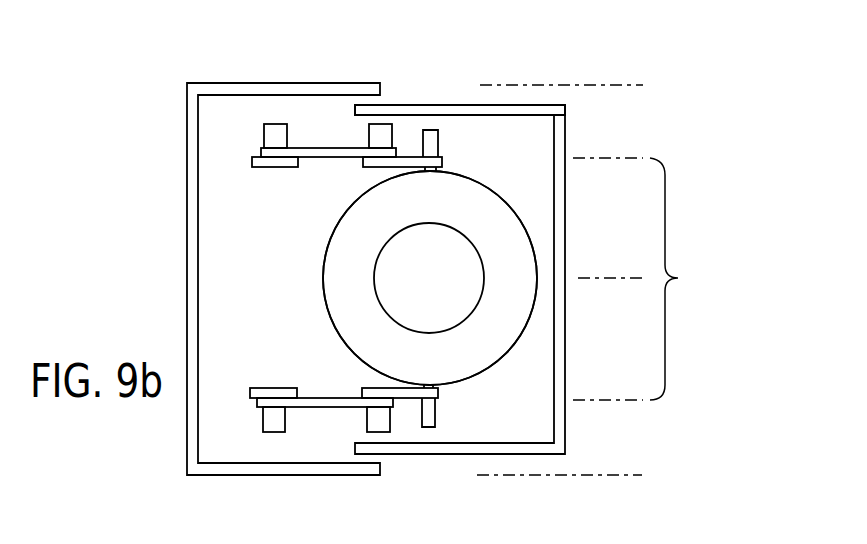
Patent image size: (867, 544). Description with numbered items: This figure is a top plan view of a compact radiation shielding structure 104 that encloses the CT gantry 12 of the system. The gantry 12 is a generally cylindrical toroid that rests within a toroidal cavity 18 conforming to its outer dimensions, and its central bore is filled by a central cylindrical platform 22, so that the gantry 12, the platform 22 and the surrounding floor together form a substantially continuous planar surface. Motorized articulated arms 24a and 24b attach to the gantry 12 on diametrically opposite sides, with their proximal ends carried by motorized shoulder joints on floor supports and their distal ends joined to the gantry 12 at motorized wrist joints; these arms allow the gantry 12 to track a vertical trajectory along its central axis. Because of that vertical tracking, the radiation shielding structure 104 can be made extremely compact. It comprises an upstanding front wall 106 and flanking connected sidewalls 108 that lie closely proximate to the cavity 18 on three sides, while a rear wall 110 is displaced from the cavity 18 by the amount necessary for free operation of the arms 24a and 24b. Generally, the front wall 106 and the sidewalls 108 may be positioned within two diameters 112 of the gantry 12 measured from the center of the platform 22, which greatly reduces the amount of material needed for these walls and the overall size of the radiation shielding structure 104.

The gantry 12 is at (347, 287).
The toroidal cavity 18 is at (485, 370).
The central cylindrical platform 22 is at (449, 264).
The motorized articulated arm 24a is at (324, 148).
The motorized articulated arm 24b is at (325, 407).
The radiation shielding structure 104 is at (397, 94).
The front wall 106 is at (565, 327).
The sidewalls 108 is at (448, 104).
The rear wall 110 is at (187, 277).
The two diameters 112 is at (599, 280).